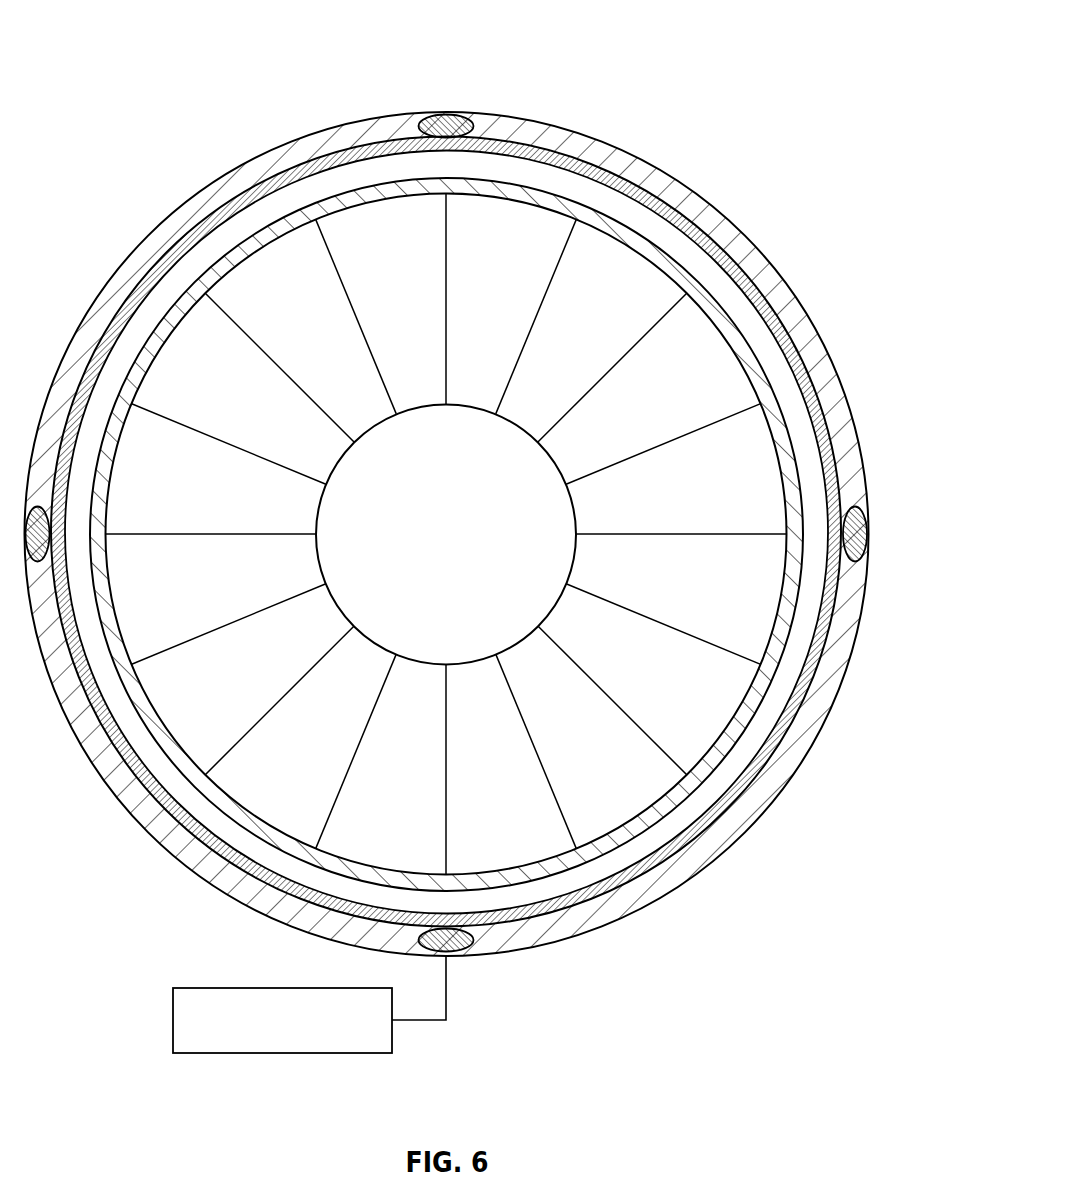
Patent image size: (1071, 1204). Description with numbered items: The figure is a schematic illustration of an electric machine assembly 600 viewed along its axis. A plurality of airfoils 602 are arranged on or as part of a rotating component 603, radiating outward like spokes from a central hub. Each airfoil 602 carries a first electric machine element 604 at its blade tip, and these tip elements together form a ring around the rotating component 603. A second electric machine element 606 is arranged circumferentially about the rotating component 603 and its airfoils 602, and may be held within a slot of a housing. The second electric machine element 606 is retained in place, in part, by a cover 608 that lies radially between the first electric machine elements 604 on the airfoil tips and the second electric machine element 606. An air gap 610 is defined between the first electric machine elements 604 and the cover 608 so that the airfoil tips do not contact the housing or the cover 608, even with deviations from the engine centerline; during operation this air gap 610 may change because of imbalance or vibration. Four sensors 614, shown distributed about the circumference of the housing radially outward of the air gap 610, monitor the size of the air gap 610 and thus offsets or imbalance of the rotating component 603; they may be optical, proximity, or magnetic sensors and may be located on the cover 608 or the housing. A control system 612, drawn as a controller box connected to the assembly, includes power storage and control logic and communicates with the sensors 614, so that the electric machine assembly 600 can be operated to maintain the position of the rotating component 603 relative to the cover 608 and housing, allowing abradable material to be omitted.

The electric machine assembly 600 is at (474, 507).
The airfoils 602 is at (260, 237).
The rotating component 603 is at (196, 352).
The first electric machine element 604 is at (257, 267).
The second electric machine element 606 is at (360, 133).
The cover 608 is at (522, 172).
The air gap 610 is at (630, 216).
The control system 612 is at (237, 1054).
The sensors 614 is at (442, 119).